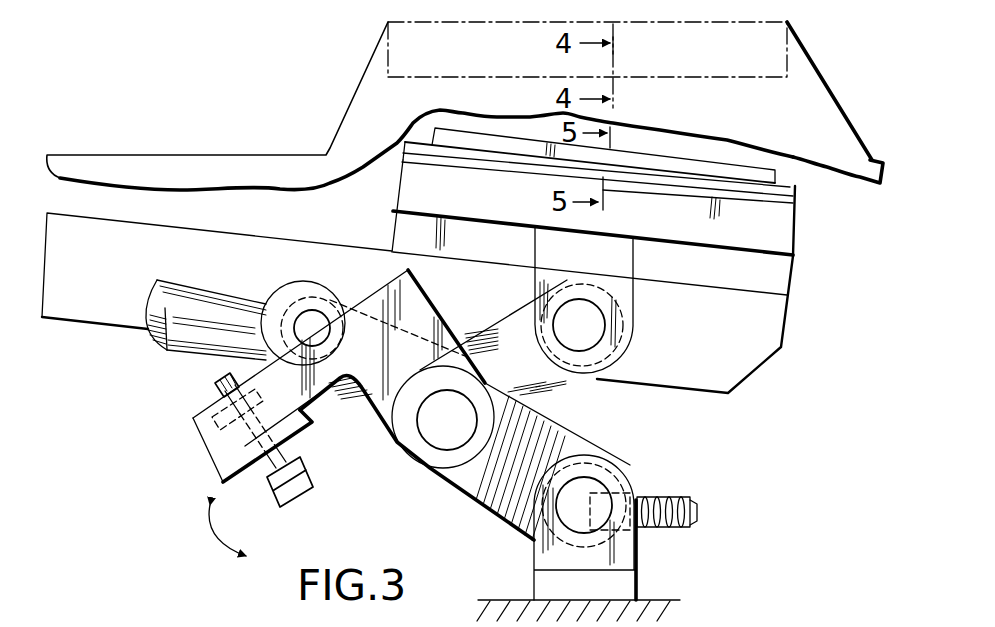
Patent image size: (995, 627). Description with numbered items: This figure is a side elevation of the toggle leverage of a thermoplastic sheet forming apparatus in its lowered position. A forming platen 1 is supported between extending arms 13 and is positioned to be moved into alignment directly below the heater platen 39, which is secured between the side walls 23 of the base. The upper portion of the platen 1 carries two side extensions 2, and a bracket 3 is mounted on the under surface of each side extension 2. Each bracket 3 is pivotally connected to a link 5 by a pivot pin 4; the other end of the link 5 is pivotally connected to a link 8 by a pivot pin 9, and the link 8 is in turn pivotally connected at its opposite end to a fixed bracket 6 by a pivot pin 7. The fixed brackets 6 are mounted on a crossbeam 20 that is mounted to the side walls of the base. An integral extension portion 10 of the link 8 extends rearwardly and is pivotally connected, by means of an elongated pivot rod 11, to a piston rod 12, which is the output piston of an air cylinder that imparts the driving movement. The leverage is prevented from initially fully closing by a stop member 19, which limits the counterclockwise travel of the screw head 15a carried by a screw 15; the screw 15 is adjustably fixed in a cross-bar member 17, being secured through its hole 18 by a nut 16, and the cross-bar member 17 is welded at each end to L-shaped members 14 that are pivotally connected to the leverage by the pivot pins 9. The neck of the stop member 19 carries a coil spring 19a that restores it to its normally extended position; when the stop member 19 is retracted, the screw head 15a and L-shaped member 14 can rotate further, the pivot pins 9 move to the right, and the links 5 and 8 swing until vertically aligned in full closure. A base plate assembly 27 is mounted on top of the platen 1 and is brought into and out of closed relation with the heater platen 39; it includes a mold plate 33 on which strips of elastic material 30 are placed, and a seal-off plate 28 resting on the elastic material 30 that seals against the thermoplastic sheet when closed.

The forming platen 1 is at (796, 282).
The side extension 2 is at (780, 234).
The bracket 3 is at (634, 249).
The pivot pin 4 is at (604, 332).
The link 5 is at (557, 392).
The fixed bracket 6 is at (627, 560).
The pivot pin 7 is at (587, 487).
The link 8 is at (463, 490).
The pivot pin 9 is at (447, 438).
The integral extension portion 10 is at (327, 287).
The elongated pivot rod 11 is at (303, 317).
The piston rod 12 is at (170, 350).
The extending arm 13 is at (87, 307).
The L-shaped member 14 is at (423, 313).
The screw 15 is at (290, 445).
The screw head 15a is at (298, 488).
The nut 16 is at (188, 423).
The cross-bar member 17 is at (217, 475).
The hole 18 is at (210, 453).
The stop member 19 is at (643, 493).
The coil spring 19a is at (672, 498).
The crossbeam 20 is at (660, 602).
The side wall 23 is at (172, 163).
The base plate assembly 27 is at (783, 171).
The seal-off plate 28 is at (448, 128).
The elastic material 30 is at (415, 130).
The mold plate 33 is at (392, 160).
The heater platen 39 is at (777, 43).